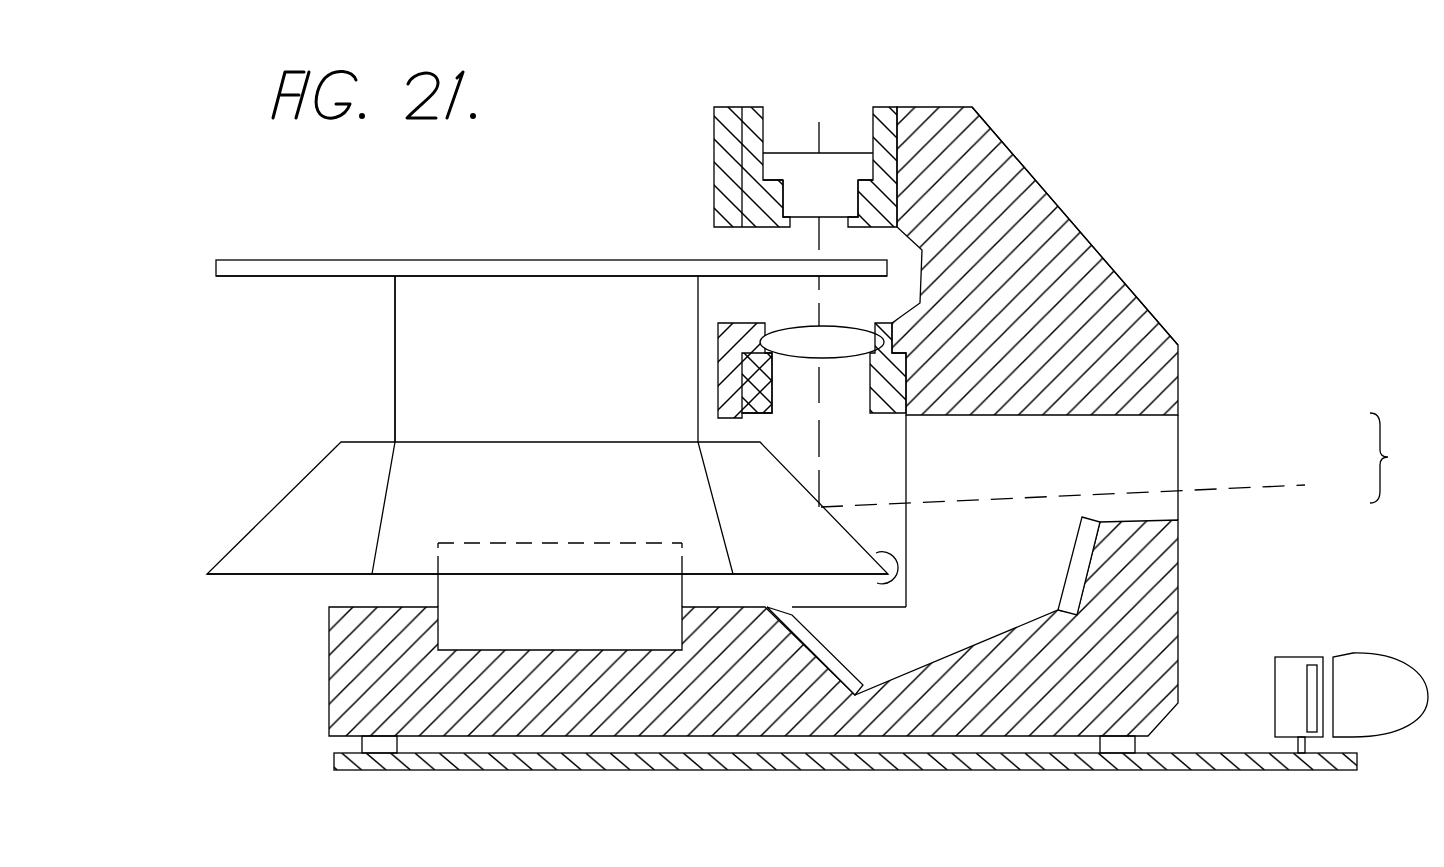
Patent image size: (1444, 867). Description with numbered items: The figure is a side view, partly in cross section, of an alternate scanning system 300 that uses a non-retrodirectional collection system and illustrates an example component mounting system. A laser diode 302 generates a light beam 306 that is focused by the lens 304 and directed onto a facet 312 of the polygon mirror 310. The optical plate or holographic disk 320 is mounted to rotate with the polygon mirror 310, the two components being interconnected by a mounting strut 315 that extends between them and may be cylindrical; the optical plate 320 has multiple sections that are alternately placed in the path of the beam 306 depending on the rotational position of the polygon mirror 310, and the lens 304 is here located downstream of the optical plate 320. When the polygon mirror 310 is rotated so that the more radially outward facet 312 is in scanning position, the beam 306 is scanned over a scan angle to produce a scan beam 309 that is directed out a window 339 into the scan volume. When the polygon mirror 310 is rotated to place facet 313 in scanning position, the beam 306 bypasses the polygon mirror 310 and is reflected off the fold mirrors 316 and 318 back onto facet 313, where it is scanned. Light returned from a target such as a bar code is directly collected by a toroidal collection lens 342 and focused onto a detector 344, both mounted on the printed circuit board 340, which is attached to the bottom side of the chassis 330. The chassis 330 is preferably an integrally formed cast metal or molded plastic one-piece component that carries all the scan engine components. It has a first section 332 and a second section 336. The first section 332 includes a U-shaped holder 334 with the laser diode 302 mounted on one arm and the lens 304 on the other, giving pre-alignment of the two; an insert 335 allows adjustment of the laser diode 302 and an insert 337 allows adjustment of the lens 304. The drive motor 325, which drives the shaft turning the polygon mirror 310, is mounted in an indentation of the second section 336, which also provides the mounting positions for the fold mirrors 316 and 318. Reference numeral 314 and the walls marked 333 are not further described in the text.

The scanning system 300 is at (1196, 101).
The laser diode 302 is at (835, 162).
The lens 304 is at (795, 327).
The light beam 306 is at (820, 247).
The scan beam 309 is at (1257, 487).
The polygon mirror 310 is at (255, 586).
The mirror facet 312 is at (895, 580).
The facet 313 is at (530, 455).
The holder body 314 is at (273, 505).
The mounting strut 315 is at (395, 338).
The fold mirror 316 is at (830, 645).
The fold mirror 318 is at (1065, 577).
The optical plate 320 is at (257, 285).
The drive motor 325 is at (580, 620).
The chassis 330 is at (1050, 181).
The first section 332 is at (990, 127).
The channel walls 333 is at (906, 452).
The U-shaped holder 334 is at (714, 156).
The insert 335 is at (882, 107).
The second section 336 is at (329, 690).
The insert 337 is at (873, 393).
The window 339 is at (1401, 458).
The printed circuit board 340 is at (775, 771).
The toroidal collection lens 342 is at (1355, 652).
The detector 344 is at (1305, 690).